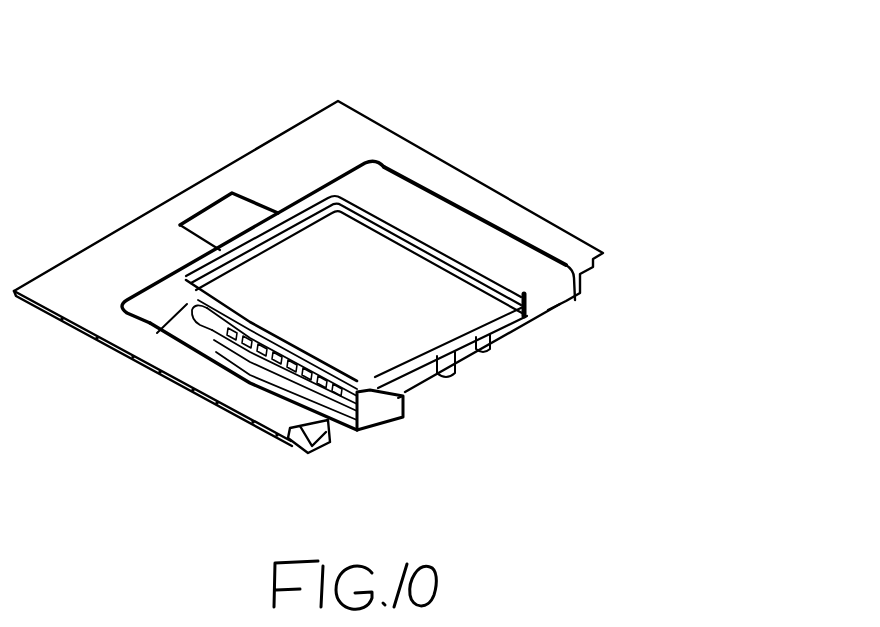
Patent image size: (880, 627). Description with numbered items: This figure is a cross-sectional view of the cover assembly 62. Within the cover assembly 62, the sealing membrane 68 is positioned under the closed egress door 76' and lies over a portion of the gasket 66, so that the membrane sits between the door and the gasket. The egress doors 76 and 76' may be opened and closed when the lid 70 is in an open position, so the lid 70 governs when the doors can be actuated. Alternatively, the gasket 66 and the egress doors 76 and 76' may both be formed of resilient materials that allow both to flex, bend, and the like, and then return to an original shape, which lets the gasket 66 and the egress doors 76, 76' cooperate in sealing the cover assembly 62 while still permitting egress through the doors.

The cover assembly 62 is at (747, 437).
The gasket 66 is at (527, 313).
The sealing membrane 68 is at (398, 398).
The lid 70 is at (380, 178).
The egress door 76 is at (300, 411).
The egress door 76' is at (384, 283).